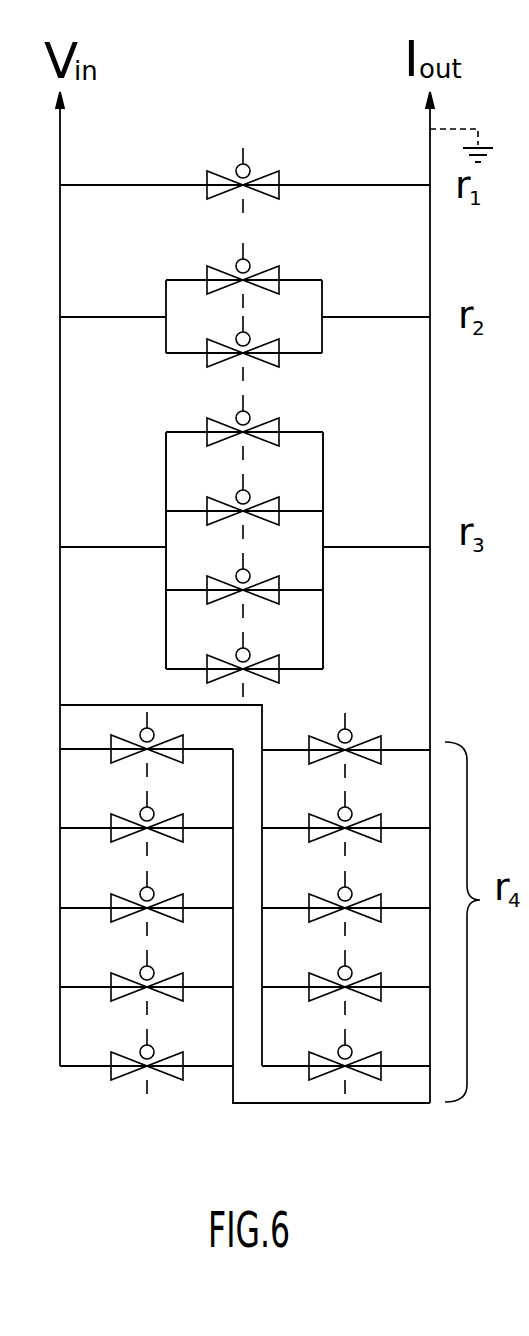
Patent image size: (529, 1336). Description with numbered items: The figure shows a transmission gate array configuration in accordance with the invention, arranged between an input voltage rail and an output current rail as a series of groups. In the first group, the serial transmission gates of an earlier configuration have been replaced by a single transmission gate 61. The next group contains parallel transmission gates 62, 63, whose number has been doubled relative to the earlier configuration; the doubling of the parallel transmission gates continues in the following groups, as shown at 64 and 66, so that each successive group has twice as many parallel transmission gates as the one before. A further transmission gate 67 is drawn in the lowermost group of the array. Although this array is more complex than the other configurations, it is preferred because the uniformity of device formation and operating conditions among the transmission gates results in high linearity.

The single transmission gate 61 is at (278, 172).
The parallel transmission gate 62 is at (278, 268).
The parallel transmission gate 63 is at (268, 340).
The group of parallel transmission gates 64 is at (323, 430).
The group of parallel transmission gates 66 is at (358, 742).
The transistor of fourth resistor stage r4 (first branch) 67 is at (92, 1066).